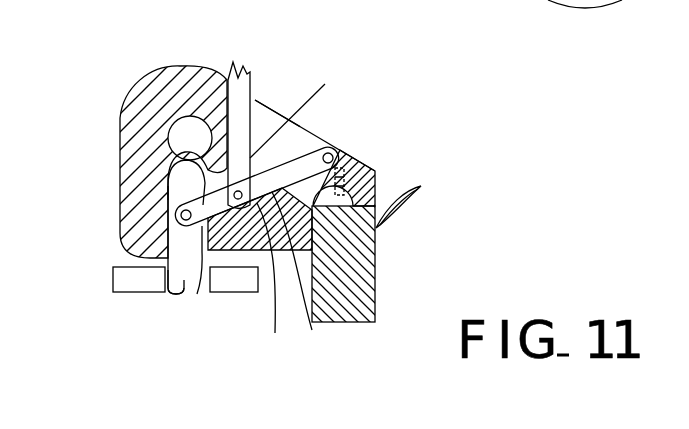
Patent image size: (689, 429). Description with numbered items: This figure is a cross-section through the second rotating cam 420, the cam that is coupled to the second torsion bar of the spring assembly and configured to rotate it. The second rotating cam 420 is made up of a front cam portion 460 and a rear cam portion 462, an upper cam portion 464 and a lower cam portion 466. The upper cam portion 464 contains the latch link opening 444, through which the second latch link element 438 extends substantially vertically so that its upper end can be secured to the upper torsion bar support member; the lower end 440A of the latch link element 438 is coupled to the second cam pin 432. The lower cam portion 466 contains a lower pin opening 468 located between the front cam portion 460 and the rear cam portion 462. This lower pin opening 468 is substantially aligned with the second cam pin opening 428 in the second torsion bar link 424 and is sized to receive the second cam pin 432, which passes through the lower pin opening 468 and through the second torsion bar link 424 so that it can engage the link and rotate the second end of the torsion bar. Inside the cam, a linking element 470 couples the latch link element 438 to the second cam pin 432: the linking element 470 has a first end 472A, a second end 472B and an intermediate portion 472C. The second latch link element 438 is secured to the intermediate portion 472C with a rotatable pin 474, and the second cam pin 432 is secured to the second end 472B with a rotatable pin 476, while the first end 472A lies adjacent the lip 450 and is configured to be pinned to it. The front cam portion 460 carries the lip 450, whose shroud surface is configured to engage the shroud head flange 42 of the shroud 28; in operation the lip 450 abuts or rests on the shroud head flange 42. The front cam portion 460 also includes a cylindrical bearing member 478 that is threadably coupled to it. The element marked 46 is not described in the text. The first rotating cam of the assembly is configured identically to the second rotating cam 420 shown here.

The rear cam portion 462 is at (120, 149).
The second latch link element 438 is at (241, 64).
The second rotating cam 420 is at (284, 112).
The upper cam portion 464 is at (272, 104).
The lower end 440A is at (322, 111).
The linking element 470 is at (297, 160).
The first end 472A is at (333, 152).
The second end 472B is at (130, 180).
The intermediate portion 472C is at (362, 250).
The rotatable pin 476 is at (122, 211).
The latch link opening 444 is at (355, 155).
The cam lip 450 is at (352, 176).
The shroud 28 is at (424, 189).
The cylindrical bearing member 478 is at (378, 227).
The shroud head flange 42 is at (370, 288).
The rotatable pin 474 is at (314, 275).
The front cam portion 460 is at (272, 284).
The lower cam portion 466 is at (147, 248).
The second cam pin opening 428 is at (170, 294).
The second cam pin 432 is at (178, 296).
The lower pin opening 468 is at (194, 292).
The second torsion bar link 424 is at (113, 280).
The roller 46 is at (623, 1).